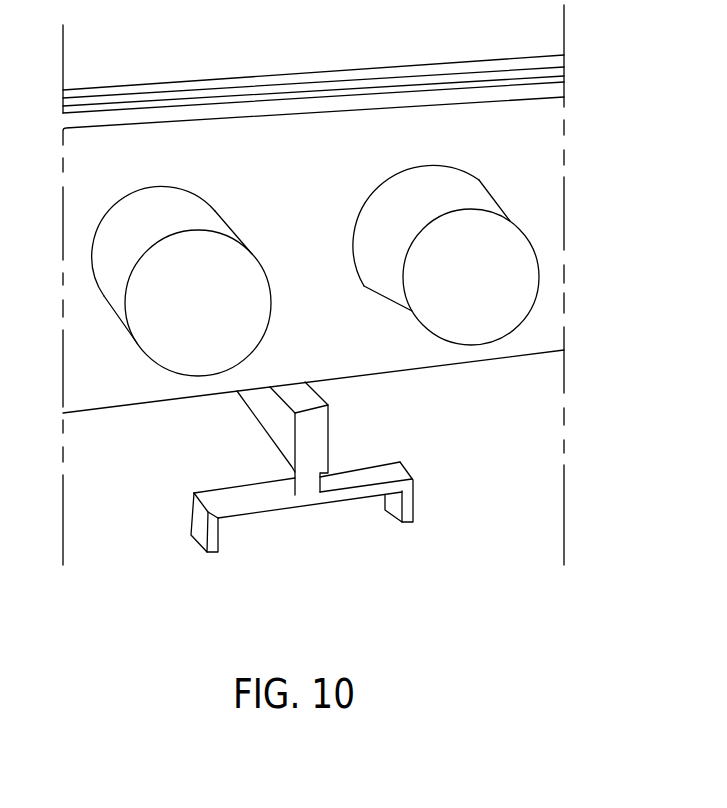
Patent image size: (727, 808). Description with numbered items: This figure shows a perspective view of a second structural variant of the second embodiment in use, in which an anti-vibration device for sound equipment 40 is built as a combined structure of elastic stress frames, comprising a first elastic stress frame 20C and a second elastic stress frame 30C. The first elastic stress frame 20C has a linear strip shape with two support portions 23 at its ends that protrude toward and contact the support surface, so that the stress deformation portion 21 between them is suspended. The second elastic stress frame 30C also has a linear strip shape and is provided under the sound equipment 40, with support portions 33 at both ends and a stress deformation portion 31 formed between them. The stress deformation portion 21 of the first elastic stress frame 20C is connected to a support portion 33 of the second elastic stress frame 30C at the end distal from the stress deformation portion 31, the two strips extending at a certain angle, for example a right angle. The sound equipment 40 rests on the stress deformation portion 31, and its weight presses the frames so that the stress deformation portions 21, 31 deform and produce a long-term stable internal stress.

The sound equipment 40 is at (298, 173).
The second elastic stress frame 30C is at (306, 394).
The stress deformation portion 31 is at (303, 405).
The support portion 33 is at (293, 485).
The first elastic stress frame 20C is at (304, 541).
The stress deformation portion 21 is at (383, 475).
The support portion 23 is at (203, 548).